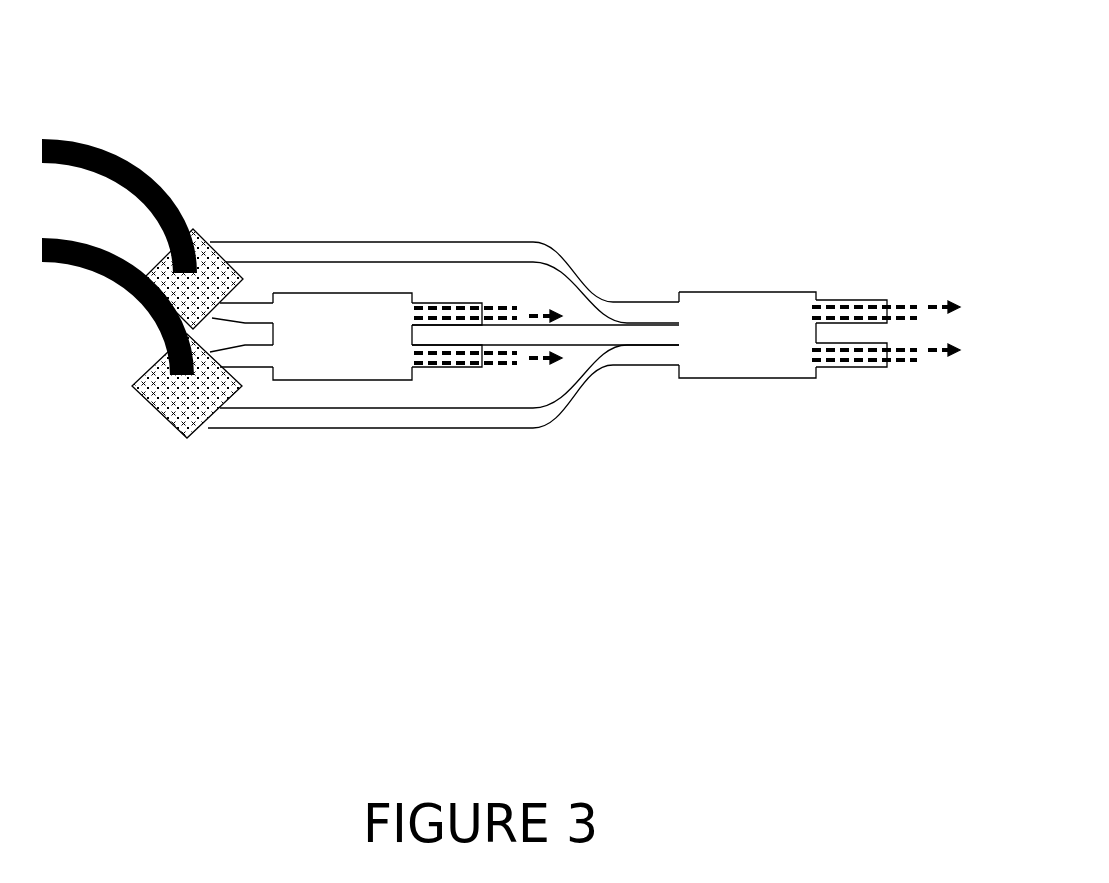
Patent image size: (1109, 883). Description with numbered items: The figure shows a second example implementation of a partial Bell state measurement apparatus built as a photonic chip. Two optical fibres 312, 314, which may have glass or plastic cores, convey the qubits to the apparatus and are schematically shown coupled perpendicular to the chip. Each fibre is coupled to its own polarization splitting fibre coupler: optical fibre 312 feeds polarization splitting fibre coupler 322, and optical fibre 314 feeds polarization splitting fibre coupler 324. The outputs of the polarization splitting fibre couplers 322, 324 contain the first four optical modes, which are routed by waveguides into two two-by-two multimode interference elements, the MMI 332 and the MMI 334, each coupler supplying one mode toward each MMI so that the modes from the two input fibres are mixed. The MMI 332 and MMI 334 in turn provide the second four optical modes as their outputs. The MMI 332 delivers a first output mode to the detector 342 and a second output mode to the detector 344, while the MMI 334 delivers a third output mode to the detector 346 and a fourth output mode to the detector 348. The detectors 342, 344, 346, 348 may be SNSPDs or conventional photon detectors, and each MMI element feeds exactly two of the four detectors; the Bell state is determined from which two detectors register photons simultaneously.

The optical fibre 312 is at (108, 146).
The optical fibre 314 is at (110, 283).
The polarization splitting fibre coupler 322 is at (214, 272).
The polarization splitting fibre coupler 324 is at (183, 410).
The 2×2 MMI 332 is at (360, 352).
The 2×2 MMI 334 is at (766, 348).
The detector 342 is at (447, 303).
The detector 344 is at (443, 367).
The detector 346 is at (840, 300).
The detector 348 is at (840, 363).